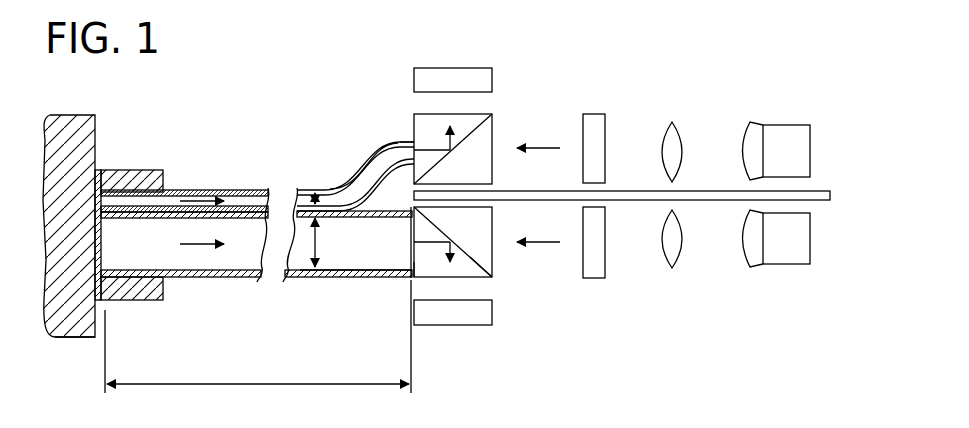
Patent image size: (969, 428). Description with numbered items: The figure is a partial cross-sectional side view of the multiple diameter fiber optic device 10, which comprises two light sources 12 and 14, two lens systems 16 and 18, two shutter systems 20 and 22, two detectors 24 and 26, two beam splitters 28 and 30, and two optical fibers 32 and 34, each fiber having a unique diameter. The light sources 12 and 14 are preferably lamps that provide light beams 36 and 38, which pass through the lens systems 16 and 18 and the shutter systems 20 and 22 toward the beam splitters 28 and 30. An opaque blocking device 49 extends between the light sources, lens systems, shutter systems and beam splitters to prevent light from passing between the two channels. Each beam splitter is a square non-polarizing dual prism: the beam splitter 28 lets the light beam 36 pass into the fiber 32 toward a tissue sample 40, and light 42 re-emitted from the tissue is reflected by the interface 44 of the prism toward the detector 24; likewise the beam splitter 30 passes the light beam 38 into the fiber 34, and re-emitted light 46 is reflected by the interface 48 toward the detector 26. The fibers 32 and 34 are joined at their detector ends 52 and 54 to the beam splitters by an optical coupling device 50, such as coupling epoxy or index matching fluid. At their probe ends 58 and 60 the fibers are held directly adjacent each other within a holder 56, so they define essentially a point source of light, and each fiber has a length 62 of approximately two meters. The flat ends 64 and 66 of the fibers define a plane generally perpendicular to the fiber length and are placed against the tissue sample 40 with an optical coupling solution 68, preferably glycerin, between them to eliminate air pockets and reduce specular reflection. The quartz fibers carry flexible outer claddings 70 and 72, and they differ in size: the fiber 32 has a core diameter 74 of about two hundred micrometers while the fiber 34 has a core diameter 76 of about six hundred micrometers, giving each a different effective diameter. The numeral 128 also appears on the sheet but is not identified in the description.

The multiple diameter fiber optic device 10 is at (589, 52).
The light source 12 is at (788, 138).
The light source 14 is at (783, 256).
The lens system 16 is at (668, 137).
The lens system 18 is at (668, 255).
The shutter system 20 is at (600, 127).
The shutter system 22 is at (593, 265).
The detector 24 is at (490, 78).
The detector 26 is at (453, 316).
The beam splitter 28 is at (488, 130).
The beam splitter 30 is at (422, 278).
The optical fiber 32 is at (370, 170).
The optical fiber 34 is at (355, 265).
The light beam 36 is at (540, 148).
The light beam 38 is at (538, 244).
The tissue sample 40 is at (95, 119).
The re-emitted light 42 is at (206, 192).
The interface 44 is at (471, 133).
The re-emitted light 46 is at (213, 260).
The interface 48 is at (476, 268).
The opaque blocking device 49 is at (693, 200).
The optical coupling device 50 is at (413, 140).
The detector end 52 is at (336, 195).
The detector end 54 is at (328, 262).
The holder 56 is at (130, 170).
The probe end 58 is at (166, 200).
The probe end 60 is at (182, 262).
The length 62 is at (257, 386).
The flat end 64 is at (113, 176).
The flat end 66 is at (103, 245).
The optical coupling solution 68 is at (96, 330).
The flexible outer cladding 70 is at (245, 190).
The flexible outer cladding 72 is at (257, 282).
The core diameter 74 is at (312, 199).
The core diameter 76 is at (318, 243).
The reference 128 is at (413, 423).